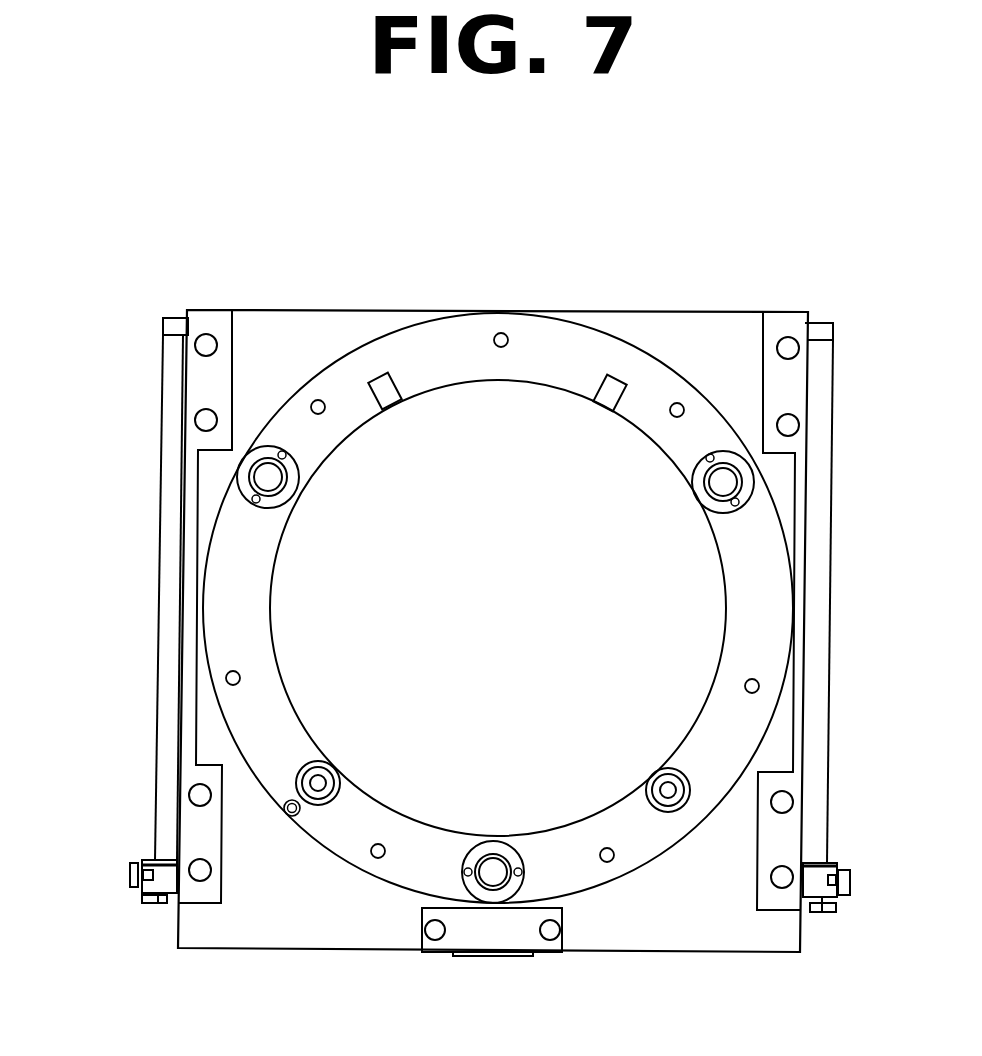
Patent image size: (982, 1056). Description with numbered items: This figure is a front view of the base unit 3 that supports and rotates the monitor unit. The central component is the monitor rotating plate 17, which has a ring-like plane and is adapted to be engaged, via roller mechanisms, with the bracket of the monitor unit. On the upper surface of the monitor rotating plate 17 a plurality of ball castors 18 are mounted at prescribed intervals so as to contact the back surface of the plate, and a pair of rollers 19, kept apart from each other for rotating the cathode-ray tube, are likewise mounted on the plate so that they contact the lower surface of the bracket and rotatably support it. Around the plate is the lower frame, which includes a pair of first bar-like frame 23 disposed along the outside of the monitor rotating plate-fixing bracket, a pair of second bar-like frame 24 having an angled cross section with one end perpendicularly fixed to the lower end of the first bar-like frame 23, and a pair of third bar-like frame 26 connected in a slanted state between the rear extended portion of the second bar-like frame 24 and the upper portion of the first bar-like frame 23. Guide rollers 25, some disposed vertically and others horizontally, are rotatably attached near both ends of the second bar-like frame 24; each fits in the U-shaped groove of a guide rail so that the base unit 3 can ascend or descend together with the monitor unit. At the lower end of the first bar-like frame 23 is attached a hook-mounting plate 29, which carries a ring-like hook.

The base unit 3 is at (142, 436).
The monitor rotating plate 17 is at (638, 852).
The ball castors 18 is at (298, 480).
The rollers 19 is at (336, 768).
The first bar-like frame 23 is at (163, 552).
The second bar-like frame 24 is at (148, 860).
The guide rollers 25 is at (150, 900).
The third bar-like frame 26 is at (823, 503).
The hook-mounting plate 29 is at (502, 940).